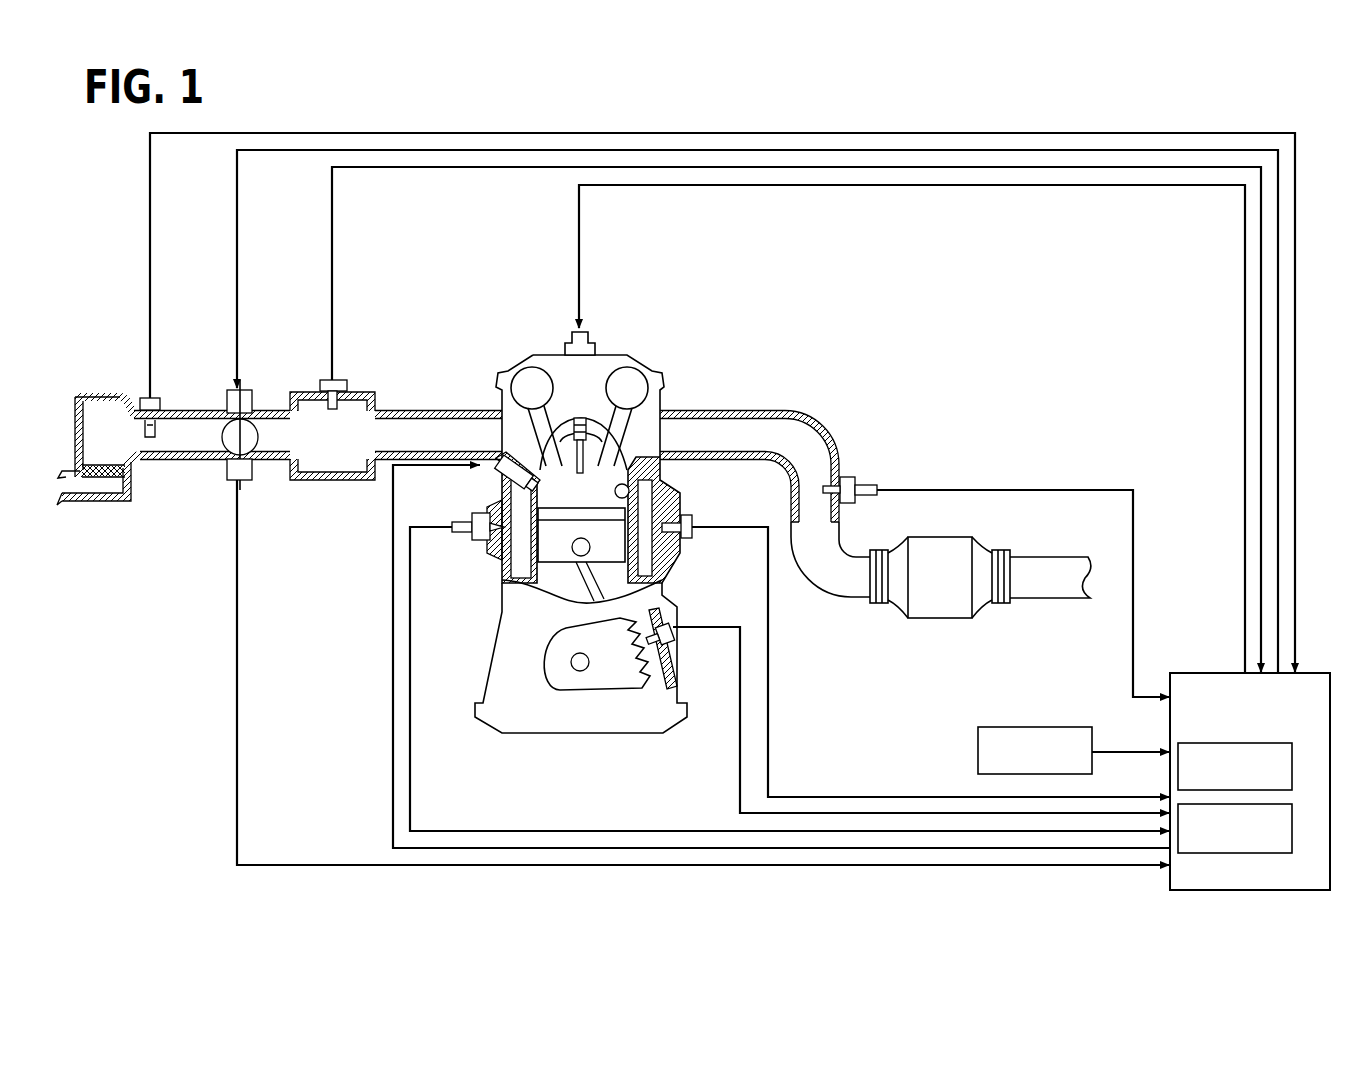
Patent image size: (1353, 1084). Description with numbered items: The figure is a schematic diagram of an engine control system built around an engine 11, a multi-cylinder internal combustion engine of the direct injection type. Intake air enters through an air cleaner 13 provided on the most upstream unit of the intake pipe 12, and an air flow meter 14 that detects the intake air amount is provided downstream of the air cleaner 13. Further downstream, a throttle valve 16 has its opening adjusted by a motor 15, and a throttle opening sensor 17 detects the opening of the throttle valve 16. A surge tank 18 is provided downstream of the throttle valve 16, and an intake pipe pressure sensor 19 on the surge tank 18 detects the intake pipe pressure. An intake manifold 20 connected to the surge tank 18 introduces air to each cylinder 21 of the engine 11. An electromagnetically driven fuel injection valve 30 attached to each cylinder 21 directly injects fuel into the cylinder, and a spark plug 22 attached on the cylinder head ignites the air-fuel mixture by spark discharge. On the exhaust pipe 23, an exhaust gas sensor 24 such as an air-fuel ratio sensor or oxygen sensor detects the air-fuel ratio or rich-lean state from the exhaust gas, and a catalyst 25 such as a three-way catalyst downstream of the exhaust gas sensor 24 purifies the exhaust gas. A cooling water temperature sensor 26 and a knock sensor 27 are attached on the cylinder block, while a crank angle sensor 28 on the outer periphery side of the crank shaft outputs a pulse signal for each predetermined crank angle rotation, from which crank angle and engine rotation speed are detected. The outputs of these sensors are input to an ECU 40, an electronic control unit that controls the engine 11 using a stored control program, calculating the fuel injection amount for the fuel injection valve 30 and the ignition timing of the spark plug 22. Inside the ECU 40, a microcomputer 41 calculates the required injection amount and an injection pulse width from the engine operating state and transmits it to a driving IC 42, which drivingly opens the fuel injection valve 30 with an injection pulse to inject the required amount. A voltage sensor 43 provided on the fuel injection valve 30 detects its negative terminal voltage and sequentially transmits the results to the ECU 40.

The engine 11 is at (576, 497).
The intake pipe 12 is at (190, 410).
The air cleaner 13 is at (103, 478).
The air flow meter 14 is at (148, 397).
The motor 15 is at (232, 389).
The throttle valve 16 is at (224, 440).
The throttle opening sensor 17 is at (248, 481).
The surge tank 18 is at (333, 481).
The intake pipe pressure sensor 19 is at (327, 379).
The intake manifold 20 is at (432, 410).
The cylinder 21 is at (635, 500).
The spark plug 22 is at (598, 420).
The exhaust pipe 23 is at (776, 411).
The exhaust gas sensor 24 is at (849, 476).
The catalyst 25 is at (948, 537).
The cooling water temperature sensor 26 is at (480, 541).
The knock sensor 27 is at (690, 541).
The crank angle sensor 28 is at (680, 645).
The fuel injection valve 30 is at (483, 478).
The ECU 40 is at (1250, 737).
The microcomputer 41 is at (1292, 757).
The driving IC 42 is at (1292, 817).
The voltage sensor 43 is at (1075, 726).